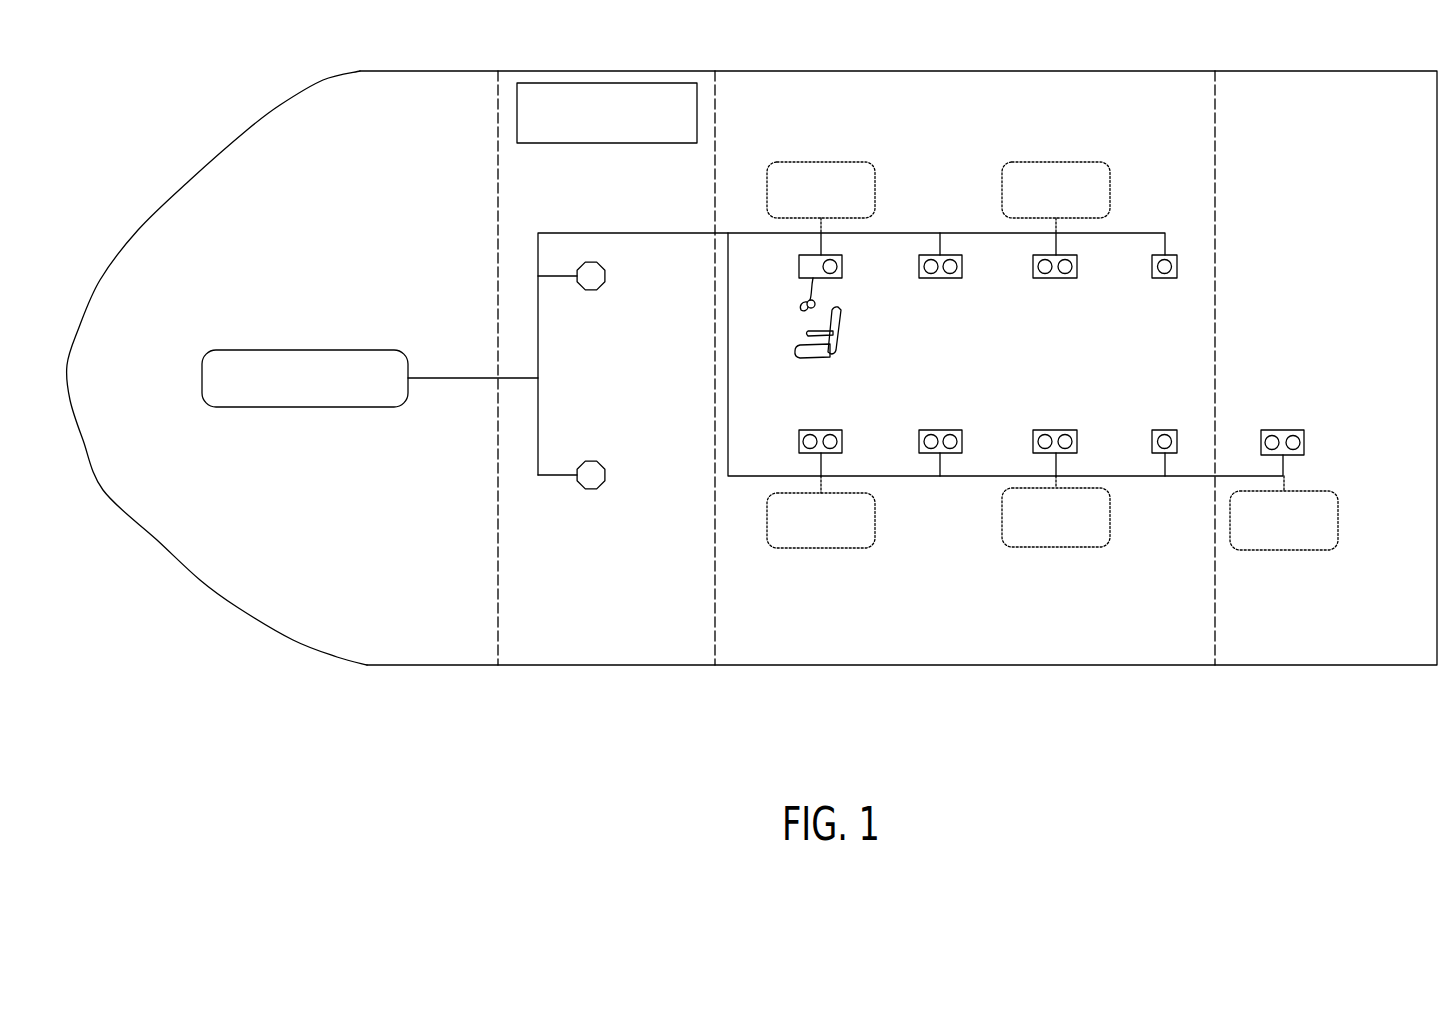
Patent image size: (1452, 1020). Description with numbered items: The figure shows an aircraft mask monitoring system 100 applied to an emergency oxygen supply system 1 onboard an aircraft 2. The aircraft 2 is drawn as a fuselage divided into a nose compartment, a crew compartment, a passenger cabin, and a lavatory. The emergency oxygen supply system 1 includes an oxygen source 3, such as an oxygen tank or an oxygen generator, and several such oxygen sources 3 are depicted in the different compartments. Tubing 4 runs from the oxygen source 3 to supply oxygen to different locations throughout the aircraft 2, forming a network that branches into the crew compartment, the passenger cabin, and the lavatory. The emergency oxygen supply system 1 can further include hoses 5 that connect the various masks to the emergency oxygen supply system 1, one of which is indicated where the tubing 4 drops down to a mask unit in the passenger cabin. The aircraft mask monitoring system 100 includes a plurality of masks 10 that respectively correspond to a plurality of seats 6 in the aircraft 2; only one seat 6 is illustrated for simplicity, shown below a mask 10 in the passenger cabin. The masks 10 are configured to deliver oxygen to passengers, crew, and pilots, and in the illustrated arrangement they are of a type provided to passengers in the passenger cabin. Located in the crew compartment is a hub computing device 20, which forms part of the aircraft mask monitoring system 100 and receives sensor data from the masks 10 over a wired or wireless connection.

The emergency oxygen supply system 1 is at (322, 288).
The aircraft 2 is at (323, 78).
The oxygen source 3 is at (240, 350).
The tubing 4 is at (642, 232).
The hoses 5 is at (1055, 242).
The seats 6 is at (838, 348).
The masks 10 is at (592, 290).
The hub computing device 20 is at (632, 138).
The aircraft mask monitoring system 100 is at (878, 141).